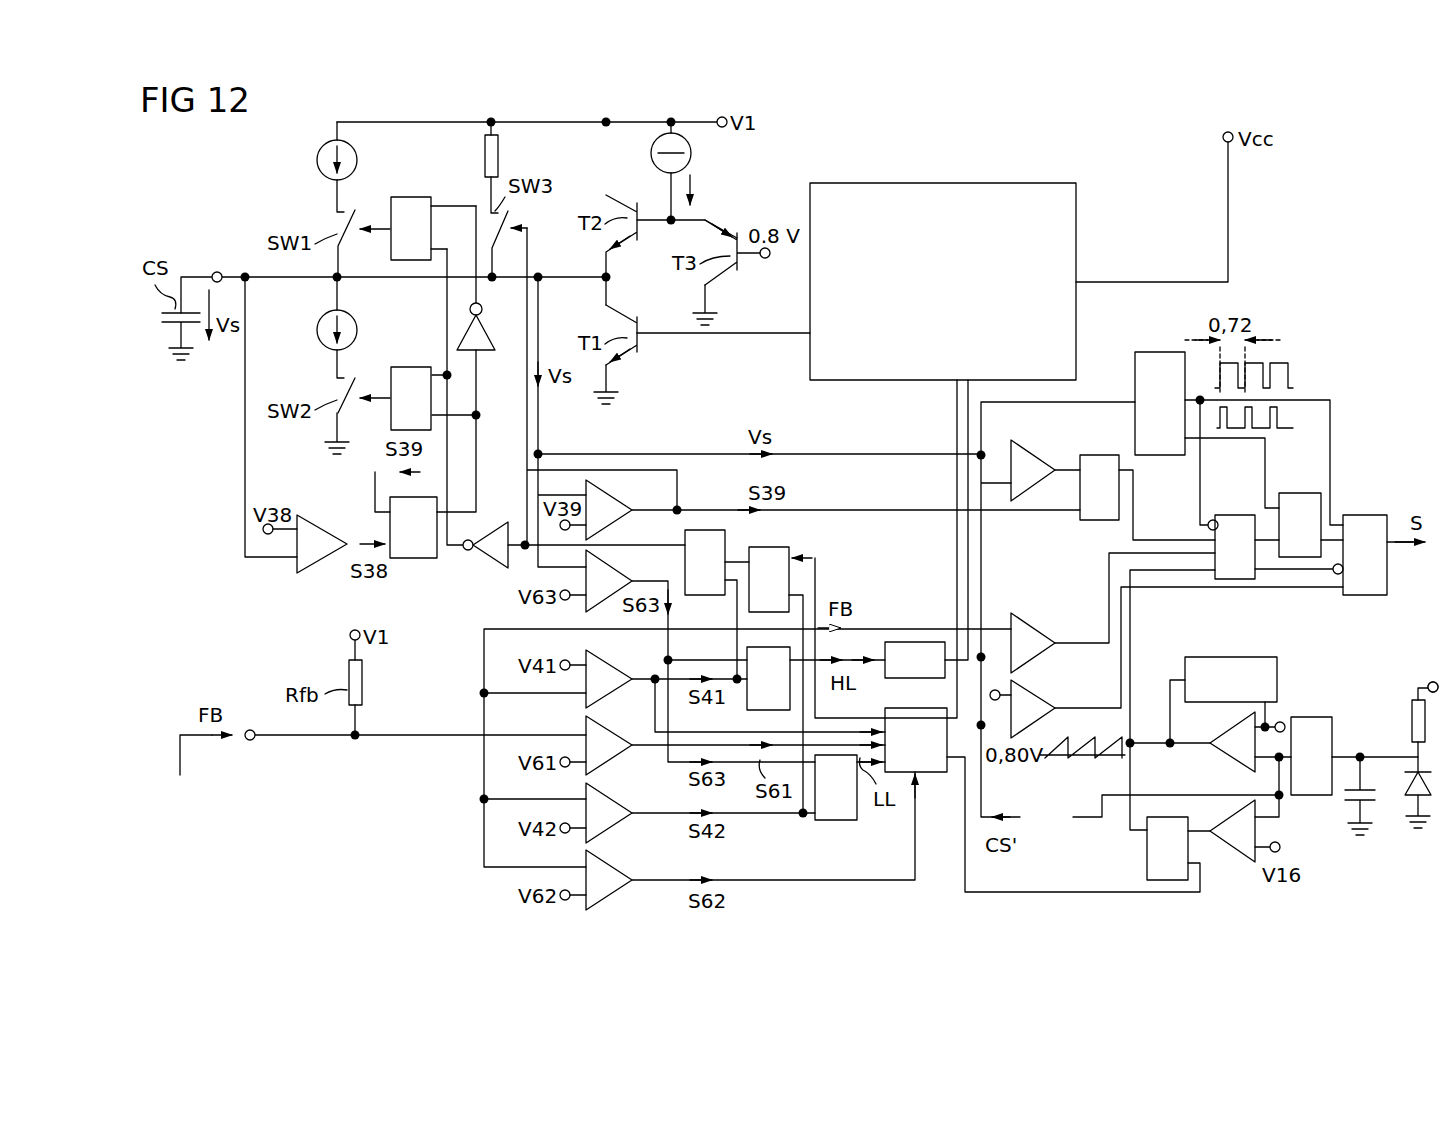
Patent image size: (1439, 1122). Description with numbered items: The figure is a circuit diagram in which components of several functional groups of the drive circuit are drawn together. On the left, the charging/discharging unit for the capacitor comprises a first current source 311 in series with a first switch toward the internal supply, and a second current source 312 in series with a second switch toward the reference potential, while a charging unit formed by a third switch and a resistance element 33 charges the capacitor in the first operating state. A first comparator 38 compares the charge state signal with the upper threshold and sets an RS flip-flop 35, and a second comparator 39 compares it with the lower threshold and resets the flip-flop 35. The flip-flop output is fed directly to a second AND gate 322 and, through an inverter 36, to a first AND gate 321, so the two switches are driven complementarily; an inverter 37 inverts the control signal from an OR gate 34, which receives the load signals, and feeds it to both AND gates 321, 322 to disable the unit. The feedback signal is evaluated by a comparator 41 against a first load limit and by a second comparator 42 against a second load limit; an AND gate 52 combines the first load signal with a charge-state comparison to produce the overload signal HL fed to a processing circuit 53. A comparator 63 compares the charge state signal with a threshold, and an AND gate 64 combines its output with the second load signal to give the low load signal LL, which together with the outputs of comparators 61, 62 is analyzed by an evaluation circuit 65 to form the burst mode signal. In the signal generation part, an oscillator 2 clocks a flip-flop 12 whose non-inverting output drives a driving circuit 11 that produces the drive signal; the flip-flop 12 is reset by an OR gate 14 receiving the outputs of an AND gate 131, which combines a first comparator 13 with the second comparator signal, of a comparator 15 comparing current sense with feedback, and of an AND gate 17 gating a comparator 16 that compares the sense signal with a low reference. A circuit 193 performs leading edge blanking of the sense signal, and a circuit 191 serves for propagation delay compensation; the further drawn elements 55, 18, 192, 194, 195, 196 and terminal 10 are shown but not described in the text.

The first current source 311 is at (314, 160).
The first AND gate 321 is at (406, 196).
The resistance element 33 is at (483, 158).
The second current source 312 is at (317, 336).
The second AND gate 322 is at (412, 365).
The inverter 36 is at (486, 355).
The inverter 37 is at (472, 564).
The first comparator 38 is at (318, 572).
The RS flip-flop 35 is at (412, 562).
The second comparator 39 is at (612, 494).
The comparator 63 is at (612, 566).
The OR gate 34 is at (687, 541).
The AND gate 55 is at (794, 554).
The comparator 41 is at (637, 658).
The comparator 61 is at (637, 724).
The second comparator 42 is at (637, 792).
The comparator 62 is at (637, 860).
The AND gate 52 is at (768, 678).
The processing circuit 53 is at (915, 660).
The AND gate 64 is at (840, 826).
The evaluation circuit 65 is at (930, 775).
The oscillator 2 is at (1163, 350).
The first comparator 13 is at (1032, 452).
The AND gate 131 is at (1097, 520).
The OR gate 14 is at (1236, 514).
The flip-flop 12 is at (1303, 493).
The driving circuit 11 is at (1364, 514).
The comparator 15 is at (1032, 626).
The comparator 18 is at (1037, 694).
The AND gate 17 is at (1147, 854).
The comparator 16 is at (1228, 858).
The propagation delay compensation circuit 191 is at (1234, 657).
The comparator 192 is at (1225, 764).
The leading edge blanking circuit 193 is at (1310, 716).
The capacitor 194 is at (1348, 800).
The zener diode 195 is at (1416, 810).
The resistor 196 is at (1410, 724).
The input terminal 10 is at (1430, 682).